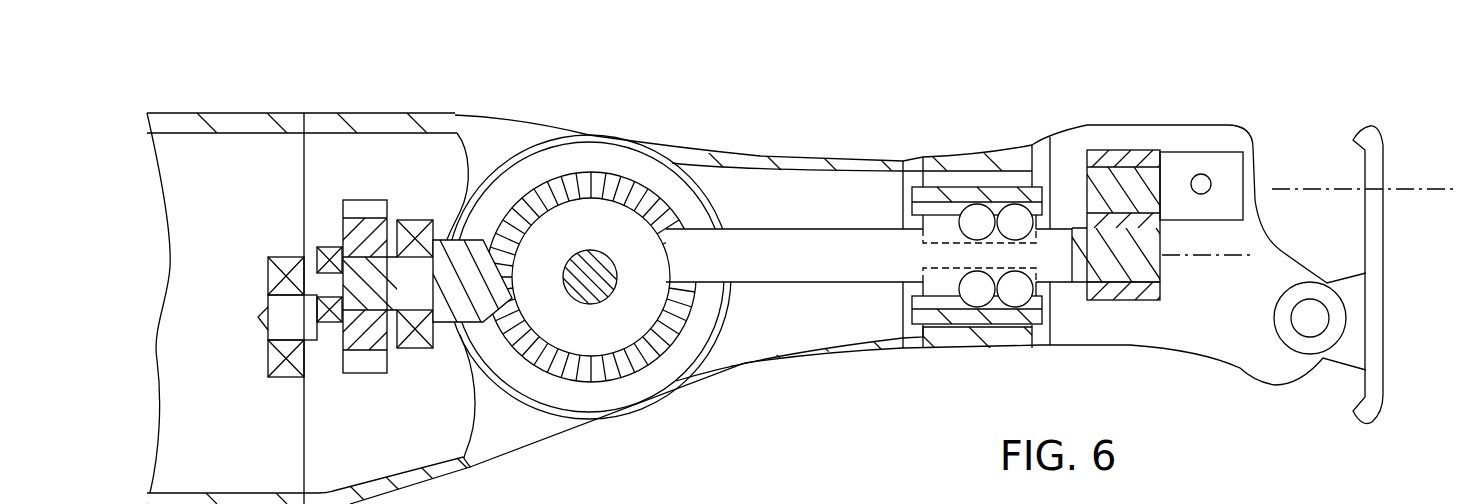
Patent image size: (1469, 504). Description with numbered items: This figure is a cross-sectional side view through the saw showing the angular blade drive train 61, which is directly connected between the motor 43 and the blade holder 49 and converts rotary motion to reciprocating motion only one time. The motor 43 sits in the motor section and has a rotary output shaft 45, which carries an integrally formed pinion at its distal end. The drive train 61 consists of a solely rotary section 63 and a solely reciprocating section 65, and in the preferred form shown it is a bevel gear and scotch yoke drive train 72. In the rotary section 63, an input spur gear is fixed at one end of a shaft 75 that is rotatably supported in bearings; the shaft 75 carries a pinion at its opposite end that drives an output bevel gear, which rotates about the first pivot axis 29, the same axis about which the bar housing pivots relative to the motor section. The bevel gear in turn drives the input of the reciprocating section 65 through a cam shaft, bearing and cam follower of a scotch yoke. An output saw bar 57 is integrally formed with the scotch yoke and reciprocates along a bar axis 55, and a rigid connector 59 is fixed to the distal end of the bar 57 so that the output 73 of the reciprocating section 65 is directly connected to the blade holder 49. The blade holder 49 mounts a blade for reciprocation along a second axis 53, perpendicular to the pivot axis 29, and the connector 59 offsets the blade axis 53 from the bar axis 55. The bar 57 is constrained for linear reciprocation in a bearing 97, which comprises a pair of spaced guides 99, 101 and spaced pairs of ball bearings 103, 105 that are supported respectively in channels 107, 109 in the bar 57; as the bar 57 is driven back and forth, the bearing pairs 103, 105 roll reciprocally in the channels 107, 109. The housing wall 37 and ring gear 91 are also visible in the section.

The first pivot axis 29 is at (598, 290).
The housing lower wall 37 is at (685, 372).
The motor 43 is at (228, 308).
The rotary output shaft 45 is at (273, 328).
The blade holder 49 is at (1133, 150).
The second axis 53 is at (1400, 188).
The bar axis 55 is at (1224, 258).
The output saw bar 57 is at (757, 245).
The rigid connector 59 is at (1123, 298).
The angular blade drive train 61 is at (778, 115).
The solely rotary section 63 is at (423, 370).
The solely reciprocating section 65 is at (840, 205).
The bevel gear and scotch yoke drive train 72 is at (723, 147).
The output of reciprocating section 73 is at (1055, 243).
The shaft 75 is at (445, 240).
The ring gear 91 is at (759, 298).
The bearing 97 is at (929, 213).
The guide 99 is at (923, 192).
The guide 101 is at (923, 320).
The ball bearings 103 is at (975, 205).
The ball bearings 105 is at (1015, 302).
The channel 107 is at (920, 236).
The channel 109 is at (905, 285).